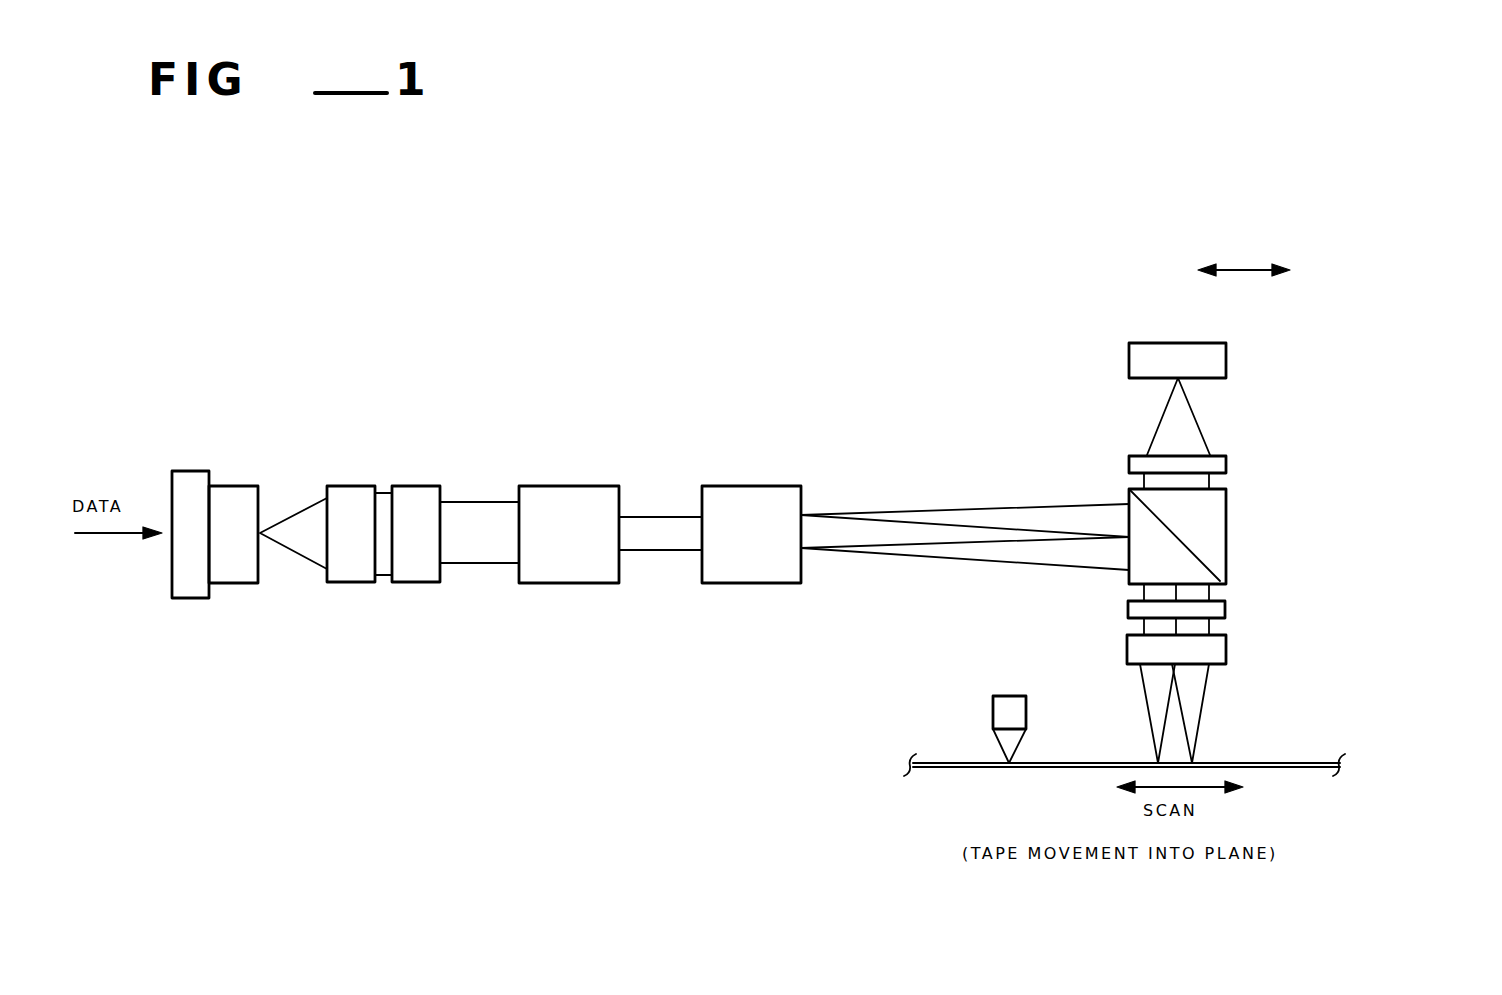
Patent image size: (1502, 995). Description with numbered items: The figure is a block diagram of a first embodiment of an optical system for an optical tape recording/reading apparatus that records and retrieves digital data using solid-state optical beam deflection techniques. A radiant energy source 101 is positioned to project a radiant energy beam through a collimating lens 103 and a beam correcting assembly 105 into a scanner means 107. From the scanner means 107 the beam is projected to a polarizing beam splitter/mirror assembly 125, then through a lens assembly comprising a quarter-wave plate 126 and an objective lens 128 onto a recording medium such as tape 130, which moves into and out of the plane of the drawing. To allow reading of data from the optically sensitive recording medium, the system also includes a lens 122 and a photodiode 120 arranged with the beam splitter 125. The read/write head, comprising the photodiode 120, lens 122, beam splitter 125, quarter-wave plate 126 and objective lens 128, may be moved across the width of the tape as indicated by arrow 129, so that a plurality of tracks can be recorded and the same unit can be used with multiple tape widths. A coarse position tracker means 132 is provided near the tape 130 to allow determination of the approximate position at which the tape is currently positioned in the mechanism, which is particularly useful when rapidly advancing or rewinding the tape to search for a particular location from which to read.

The radiant energy source 101 is at (197, 598).
The collimating lens 103 is at (353, 582).
The beam correcting assembly 105 is at (558, 583).
The scanner means 107 is at (747, 583).
The photodiode 120 is at (1242, 352).
The lens 122 is at (1242, 455).
The polarizing beam splitter/mirror assembly 125 is at (1242, 514).
The quarter-wave plate 126 is at (1242, 600).
The objective lens 128 is at (1242, 648).
The arrow 129 is at (1245, 265).
The tape 130 is at (1275, 748).
The coarse position tracker means 132 is at (910, 717).